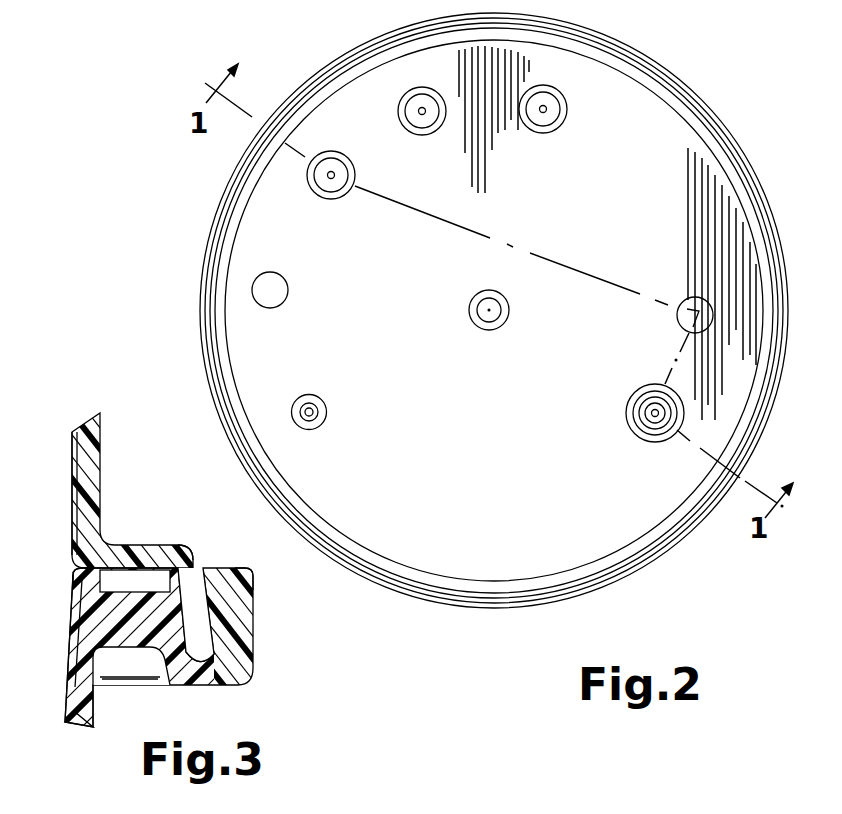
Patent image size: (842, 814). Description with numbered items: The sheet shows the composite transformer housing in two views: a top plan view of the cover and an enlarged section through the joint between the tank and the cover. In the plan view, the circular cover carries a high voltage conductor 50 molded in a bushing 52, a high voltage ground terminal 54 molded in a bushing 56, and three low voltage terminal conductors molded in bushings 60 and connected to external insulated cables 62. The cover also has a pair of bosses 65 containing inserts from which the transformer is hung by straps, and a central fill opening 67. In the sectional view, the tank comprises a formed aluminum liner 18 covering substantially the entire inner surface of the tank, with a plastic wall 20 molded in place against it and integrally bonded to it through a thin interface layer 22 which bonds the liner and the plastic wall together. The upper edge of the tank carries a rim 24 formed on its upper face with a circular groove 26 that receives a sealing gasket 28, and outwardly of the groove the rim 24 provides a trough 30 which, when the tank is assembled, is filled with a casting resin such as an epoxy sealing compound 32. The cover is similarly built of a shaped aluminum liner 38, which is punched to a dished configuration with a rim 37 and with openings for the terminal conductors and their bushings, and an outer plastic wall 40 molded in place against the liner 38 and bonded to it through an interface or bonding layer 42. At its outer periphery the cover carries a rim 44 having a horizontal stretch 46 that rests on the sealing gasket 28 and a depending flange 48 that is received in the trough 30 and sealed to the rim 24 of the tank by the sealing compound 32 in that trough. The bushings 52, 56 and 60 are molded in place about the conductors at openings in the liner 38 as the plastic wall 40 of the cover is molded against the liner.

In FIG. 3, the aluminum liner 18 is at (67, 663).
In FIG. 3, the plastic wall 20 is at (95, 697).
In FIG. 3, the interface layer 22 is at (72, 727).
In FIG. 3, the rim 24 is at (150, 652).
In FIG. 3, the circular groove 26 is at (76, 583).
In FIG. 3, the sealing gasket 28 is at (112, 577).
In FIG. 3, the trough 30 is at (253, 622).
In FIG. 3, the epoxy sealing compound 32 is at (250, 570).
In FIG. 3, the rim 37 is at (133, 560).
In FIG. 3, the aluminum liner 38 is at (72, 500).
In FIG. 3, the outer plastic wall 40 is at (93, 440).
In FIG. 3, the interface or bonding layer 42 is at (97, 477).
In FIG. 3, the rim 44 is at (187, 545).
In FIG. 3, the horizontal stretch 46 is at (177, 543).
In FIG. 3, the depending flange 48 is at (220, 577).
In FIG. 2, the high voltage conductor 50 is at (655, 412).
In FIG. 2, the bushing 52 is at (643, 437).
In FIG. 2, the high voltage ground terminal 54 is at (313, 411).
In FIG. 2, the bushing 56 is at (317, 424).
In FIG. 2, the bushings 60 is at (340, 190).
In FIG. 2, the external insulated cables 62 is at (331, 172).
In FIG. 2, the bosses 65 is at (280, 299).
In FIG. 2, the central fill opening 67 is at (500, 307).